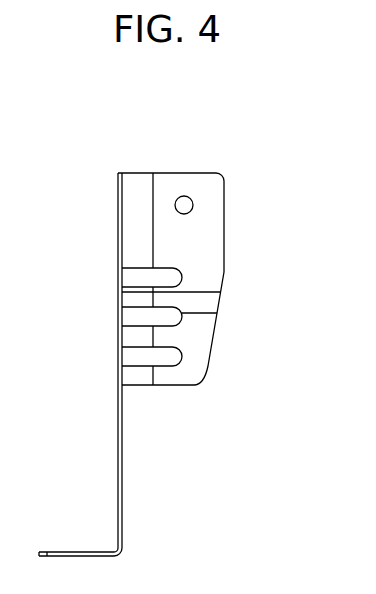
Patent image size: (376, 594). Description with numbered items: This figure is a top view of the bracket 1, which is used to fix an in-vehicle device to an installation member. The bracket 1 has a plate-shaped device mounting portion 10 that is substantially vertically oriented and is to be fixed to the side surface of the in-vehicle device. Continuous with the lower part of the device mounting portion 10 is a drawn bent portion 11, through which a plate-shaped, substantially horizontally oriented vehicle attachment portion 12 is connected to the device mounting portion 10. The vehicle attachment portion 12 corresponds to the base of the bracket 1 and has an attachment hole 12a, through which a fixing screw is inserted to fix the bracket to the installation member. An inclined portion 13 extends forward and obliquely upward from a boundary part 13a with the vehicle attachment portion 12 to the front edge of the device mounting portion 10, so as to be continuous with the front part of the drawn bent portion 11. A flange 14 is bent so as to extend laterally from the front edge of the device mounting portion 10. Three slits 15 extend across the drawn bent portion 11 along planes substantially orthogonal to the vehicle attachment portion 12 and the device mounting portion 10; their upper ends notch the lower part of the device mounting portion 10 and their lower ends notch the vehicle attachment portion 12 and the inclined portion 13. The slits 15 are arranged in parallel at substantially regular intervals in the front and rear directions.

The bracket 1 is at (117, 198).
The device mounting portion 10 is at (126, 496).
The drawn bent portion 11 is at (135, 183).
The vehicle attachment portion 12 is at (213, 236).
The attachment hole 12a is at (193, 200).
The inclined portion 13 is at (193, 353).
The boundary part 13a is at (208, 300).
The flange 14 is at (69, 552).
The slits 15 is at (142, 268).